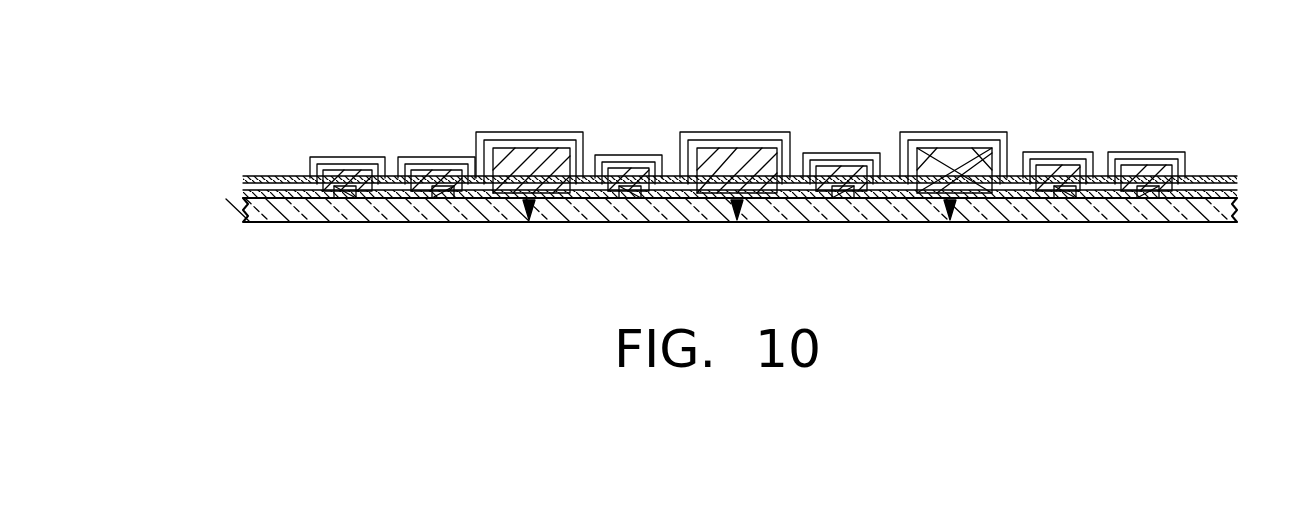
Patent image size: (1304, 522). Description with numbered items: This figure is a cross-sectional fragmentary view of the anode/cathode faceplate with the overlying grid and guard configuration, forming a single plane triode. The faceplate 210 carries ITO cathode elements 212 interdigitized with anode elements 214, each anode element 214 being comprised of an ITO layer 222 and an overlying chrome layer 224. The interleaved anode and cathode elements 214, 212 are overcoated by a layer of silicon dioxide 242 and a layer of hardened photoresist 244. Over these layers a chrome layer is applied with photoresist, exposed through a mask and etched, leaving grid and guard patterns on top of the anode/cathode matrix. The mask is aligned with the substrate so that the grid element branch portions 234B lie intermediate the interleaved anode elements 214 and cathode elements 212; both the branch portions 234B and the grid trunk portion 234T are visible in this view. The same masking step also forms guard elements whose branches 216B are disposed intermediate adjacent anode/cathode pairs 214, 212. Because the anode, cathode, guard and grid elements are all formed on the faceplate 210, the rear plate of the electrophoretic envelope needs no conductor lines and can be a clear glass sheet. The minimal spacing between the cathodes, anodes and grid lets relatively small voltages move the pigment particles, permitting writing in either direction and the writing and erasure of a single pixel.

The faceplate 210 is at (371, 218).
The ITO cathode elements 212 is at (345, 200).
The anode elements 214 is at (527, 212).
The guard element branches 216B is at (385, 177).
The ITO layer 222 is at (985, 177).
The chrome layer 224 is at (960, 172).
The grid element branch portions 234B is at (470, 177).
The grid element trunk portion 234T is at (530, 132).
The silicon dioxide layer 242 is at (243, 196).
The hardened photoresist layer 244 is at (243, 177).